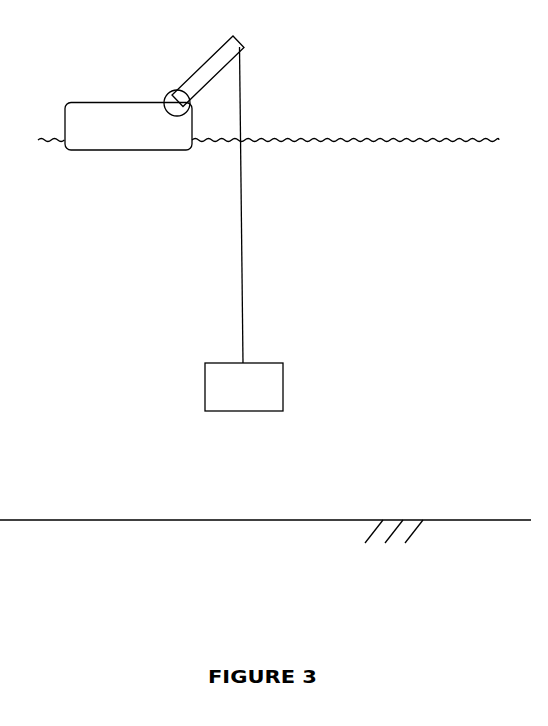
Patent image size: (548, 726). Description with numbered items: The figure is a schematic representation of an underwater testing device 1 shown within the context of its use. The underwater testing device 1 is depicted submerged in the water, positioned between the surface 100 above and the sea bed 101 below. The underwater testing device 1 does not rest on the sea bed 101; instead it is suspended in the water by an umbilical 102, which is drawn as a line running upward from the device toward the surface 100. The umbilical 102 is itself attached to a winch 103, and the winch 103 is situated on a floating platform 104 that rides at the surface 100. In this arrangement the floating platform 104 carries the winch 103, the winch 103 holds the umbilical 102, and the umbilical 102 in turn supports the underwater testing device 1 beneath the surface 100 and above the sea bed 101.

The underwater testing device 1 is at (283, 382).
The surface 100 is at (405, 138).
The sea bed 101 is at (460, 520).
The umbilical 102 is at (243, 219).
The winch 103 is at (203, 63).
The floating platform 104 is at (96, 151).